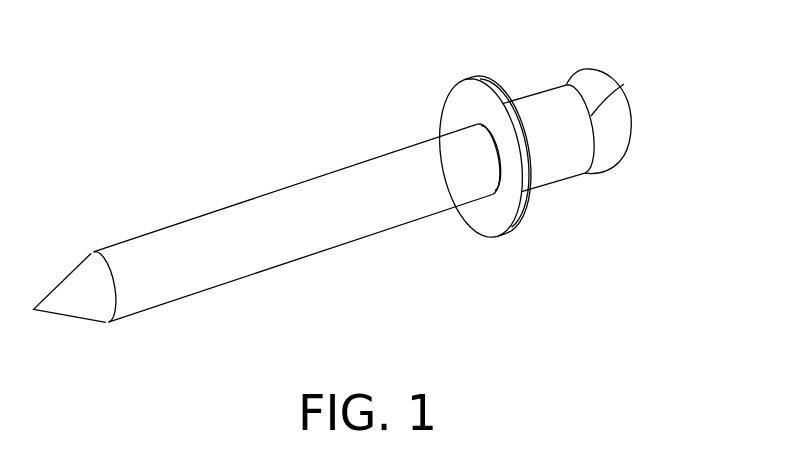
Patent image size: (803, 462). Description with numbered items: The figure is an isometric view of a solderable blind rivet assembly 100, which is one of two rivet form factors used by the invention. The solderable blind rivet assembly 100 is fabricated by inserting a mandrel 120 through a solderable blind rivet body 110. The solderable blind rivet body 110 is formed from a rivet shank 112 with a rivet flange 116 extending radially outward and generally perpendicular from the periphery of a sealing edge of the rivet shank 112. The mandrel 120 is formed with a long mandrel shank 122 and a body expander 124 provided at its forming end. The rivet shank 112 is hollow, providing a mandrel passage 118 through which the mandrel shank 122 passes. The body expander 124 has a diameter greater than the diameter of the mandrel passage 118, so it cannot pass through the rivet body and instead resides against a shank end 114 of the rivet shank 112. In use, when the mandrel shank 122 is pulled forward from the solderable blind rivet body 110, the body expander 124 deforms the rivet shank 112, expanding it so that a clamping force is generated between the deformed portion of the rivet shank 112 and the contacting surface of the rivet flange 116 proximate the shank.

The solderable blind rivet assembly 100 is at (237, 100).
The solderable blind rivet body 110 is at (552, 240).
The rivet shank 112 is at (560, 153).
The shank end 114 is at (612, 98).
The rivet flange 116 is at (492, 220).
The mandrel passage 118 is at (476, 123).
The mandrel 120 is at (297, 283).
The mandrel shank 122 is at (177, 238).
The body expander 124 is at (615, 143).